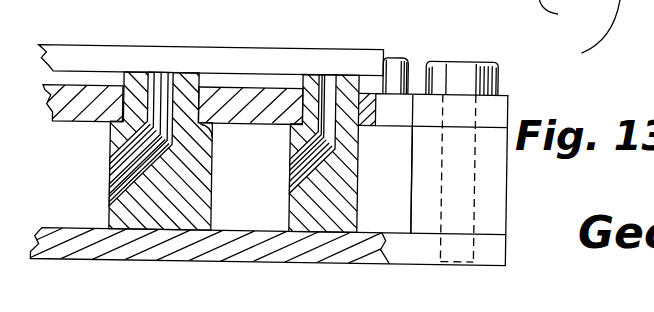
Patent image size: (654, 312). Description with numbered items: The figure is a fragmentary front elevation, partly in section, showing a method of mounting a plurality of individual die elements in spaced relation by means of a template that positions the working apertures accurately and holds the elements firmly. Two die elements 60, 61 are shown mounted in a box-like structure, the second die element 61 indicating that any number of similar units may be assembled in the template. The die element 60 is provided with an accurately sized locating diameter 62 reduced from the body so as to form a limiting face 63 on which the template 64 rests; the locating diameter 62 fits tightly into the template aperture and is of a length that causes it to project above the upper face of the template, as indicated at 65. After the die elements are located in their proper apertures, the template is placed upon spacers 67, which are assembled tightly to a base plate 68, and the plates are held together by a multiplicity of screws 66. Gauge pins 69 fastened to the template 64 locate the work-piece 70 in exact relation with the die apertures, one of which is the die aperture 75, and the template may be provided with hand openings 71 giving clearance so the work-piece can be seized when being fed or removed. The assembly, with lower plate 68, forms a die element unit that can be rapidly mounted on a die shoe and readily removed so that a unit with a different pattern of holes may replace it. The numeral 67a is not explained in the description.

The die element 60 is at (212, 177).
The die element 61 is at (359, 180).
The locating diameter 62 is at (222, 87).
The limiting face 63 is at (212, 140).
The template 64 is at (490, 104).
The projection of locating diameter above template 65 is at (118, 77).
The screws 66 is at (455, 76).
The spacers 67 is at (490, 164).
The bolt shank 67a is at (150, 78).
The base plate 68 is at (415, 260).
The gauge pins 69 is at (383, 62).
The work-piece 70 is at (300, 46).
The hand openings 71 is at (418, 27).
The die aperture 75 is at (162, 83).